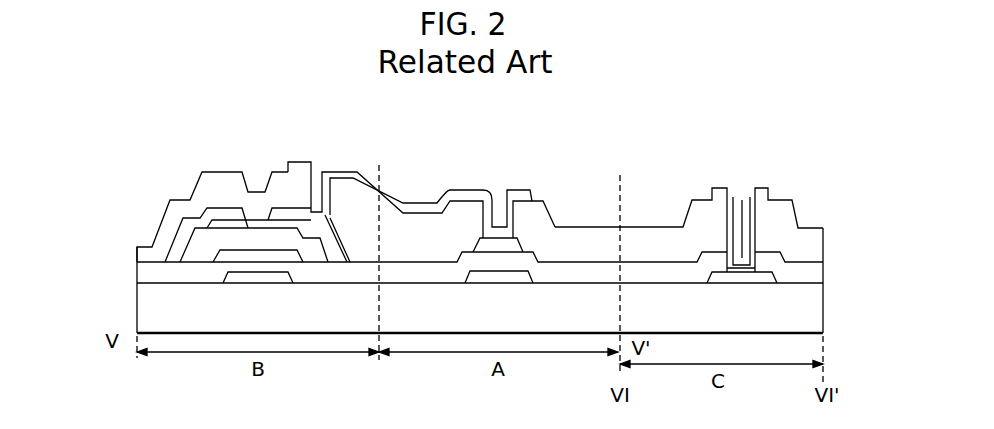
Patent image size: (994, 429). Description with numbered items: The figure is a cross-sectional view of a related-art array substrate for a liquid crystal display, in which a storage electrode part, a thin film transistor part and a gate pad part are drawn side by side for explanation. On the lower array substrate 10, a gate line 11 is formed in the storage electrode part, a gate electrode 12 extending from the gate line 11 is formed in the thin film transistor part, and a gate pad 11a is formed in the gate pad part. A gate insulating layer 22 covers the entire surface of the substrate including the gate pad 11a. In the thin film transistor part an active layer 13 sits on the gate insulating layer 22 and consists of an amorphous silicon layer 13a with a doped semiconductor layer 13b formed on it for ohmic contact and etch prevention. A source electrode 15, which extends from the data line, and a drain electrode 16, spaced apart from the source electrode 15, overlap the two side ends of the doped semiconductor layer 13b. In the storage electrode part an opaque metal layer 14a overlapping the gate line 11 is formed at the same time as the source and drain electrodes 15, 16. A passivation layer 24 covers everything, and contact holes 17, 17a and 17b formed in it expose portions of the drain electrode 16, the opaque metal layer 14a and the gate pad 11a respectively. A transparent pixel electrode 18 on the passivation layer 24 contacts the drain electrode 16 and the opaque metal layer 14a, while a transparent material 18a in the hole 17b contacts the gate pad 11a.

The lower array substrate 10 is at (137, 313).
The gate line 11 is at (498, 284).
The gate pad 11a is at (741, 284).
The gate electrode 12 is at (258, 284).
The active layer 13 is at (199, 223).
The amorphous silicon layer 13a is at (196, 251).
The doped semiconductor layer 13b is at (200, 238).
The opaque metal layer 14a is at (518, 240).
The source electrode 15 is at (227, 212).
The drain electrode 16 is at (338, 240).
The contact hole 17 is at (322, 178).
The contact hole 17a is at (498, 203).
The contact hole 17b is at (740, 202).
The pixel electrode 18 is at (415, 203).
The transparent material 18a is at (760, 195).
The gate insulating layer 22 is at (137, 277).
The passivation layer 24 is at (465, 205).